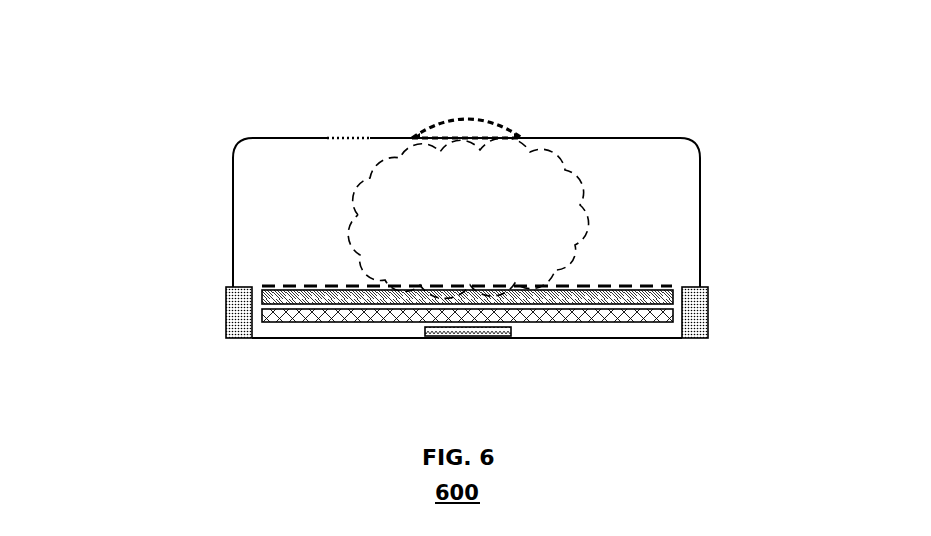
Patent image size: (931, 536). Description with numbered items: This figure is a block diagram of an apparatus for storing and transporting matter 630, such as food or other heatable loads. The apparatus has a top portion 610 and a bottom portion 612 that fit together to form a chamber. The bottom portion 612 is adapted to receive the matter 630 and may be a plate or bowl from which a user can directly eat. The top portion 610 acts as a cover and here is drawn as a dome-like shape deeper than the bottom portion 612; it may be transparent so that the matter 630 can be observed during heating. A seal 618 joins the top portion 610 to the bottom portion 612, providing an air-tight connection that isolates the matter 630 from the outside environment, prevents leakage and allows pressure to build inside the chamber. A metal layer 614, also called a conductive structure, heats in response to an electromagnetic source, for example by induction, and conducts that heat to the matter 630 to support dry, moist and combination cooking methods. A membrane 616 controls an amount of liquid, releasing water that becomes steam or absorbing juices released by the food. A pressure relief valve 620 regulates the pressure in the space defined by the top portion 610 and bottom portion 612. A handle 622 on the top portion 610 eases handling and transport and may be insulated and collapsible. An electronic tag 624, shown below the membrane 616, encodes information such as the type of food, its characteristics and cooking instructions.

The top portion 610 is at (178, 140).
The bottom portion 612 is at (178, 287).
The metal layer 614 is at (668, 290).
The membrane 616 is at (650, 322).
The seal 618 is at (708, 315).
The pressure relief valve 620 is at (348, 123).
The handle 622 is at (522, 134).
The electronic tag 624 is at (468, 337).
The matter 630 is at (485, 227).